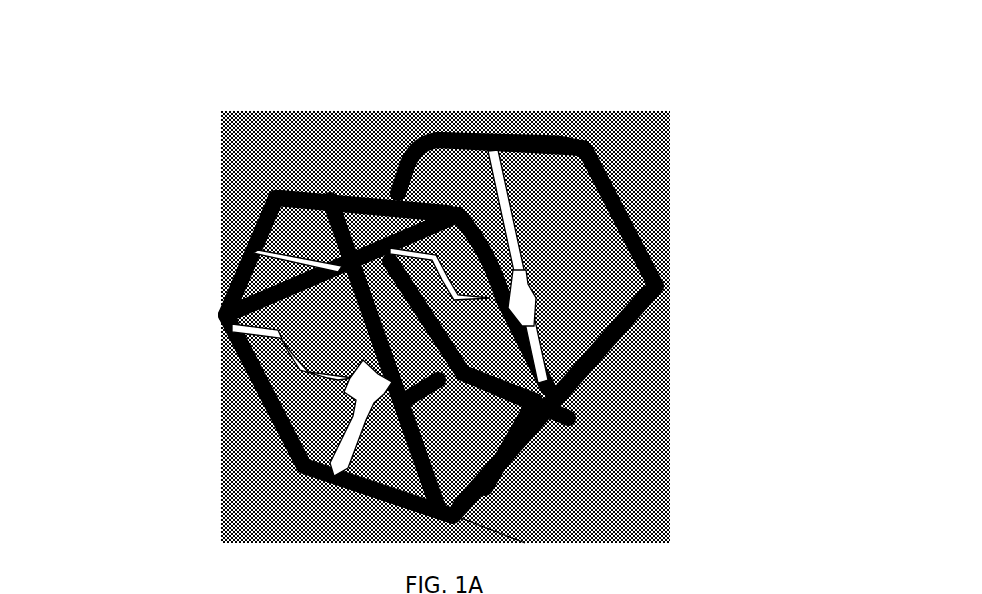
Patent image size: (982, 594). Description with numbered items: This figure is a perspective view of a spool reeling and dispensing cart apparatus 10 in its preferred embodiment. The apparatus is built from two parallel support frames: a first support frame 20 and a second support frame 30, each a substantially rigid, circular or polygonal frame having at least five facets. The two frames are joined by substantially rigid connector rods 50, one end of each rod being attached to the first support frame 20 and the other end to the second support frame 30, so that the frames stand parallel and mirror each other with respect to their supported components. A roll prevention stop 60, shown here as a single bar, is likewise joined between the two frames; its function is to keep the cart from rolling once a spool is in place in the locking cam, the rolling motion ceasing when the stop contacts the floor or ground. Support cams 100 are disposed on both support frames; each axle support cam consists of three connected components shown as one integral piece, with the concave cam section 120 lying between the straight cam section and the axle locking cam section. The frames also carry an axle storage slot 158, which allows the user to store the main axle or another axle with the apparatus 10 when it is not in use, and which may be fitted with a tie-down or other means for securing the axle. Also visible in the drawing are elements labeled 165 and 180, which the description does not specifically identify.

The spool reeling and dispensing cart apparatus 10 is at (253, 555).
The first support frame 20 is at (340, 181).
The second support frame 30 is at (602, 157).
The connector rods 50 is at (592, 335).
The roll prevention stop 60 is at (272, 245).
The support cams 100 is at (350, 378).
The concave cam section 120 is at (235, 357).
The axle storage slot 158 is at (522, 395).
The strut 165 is at (489, 148).
The coupling 180 is at (535, 283).